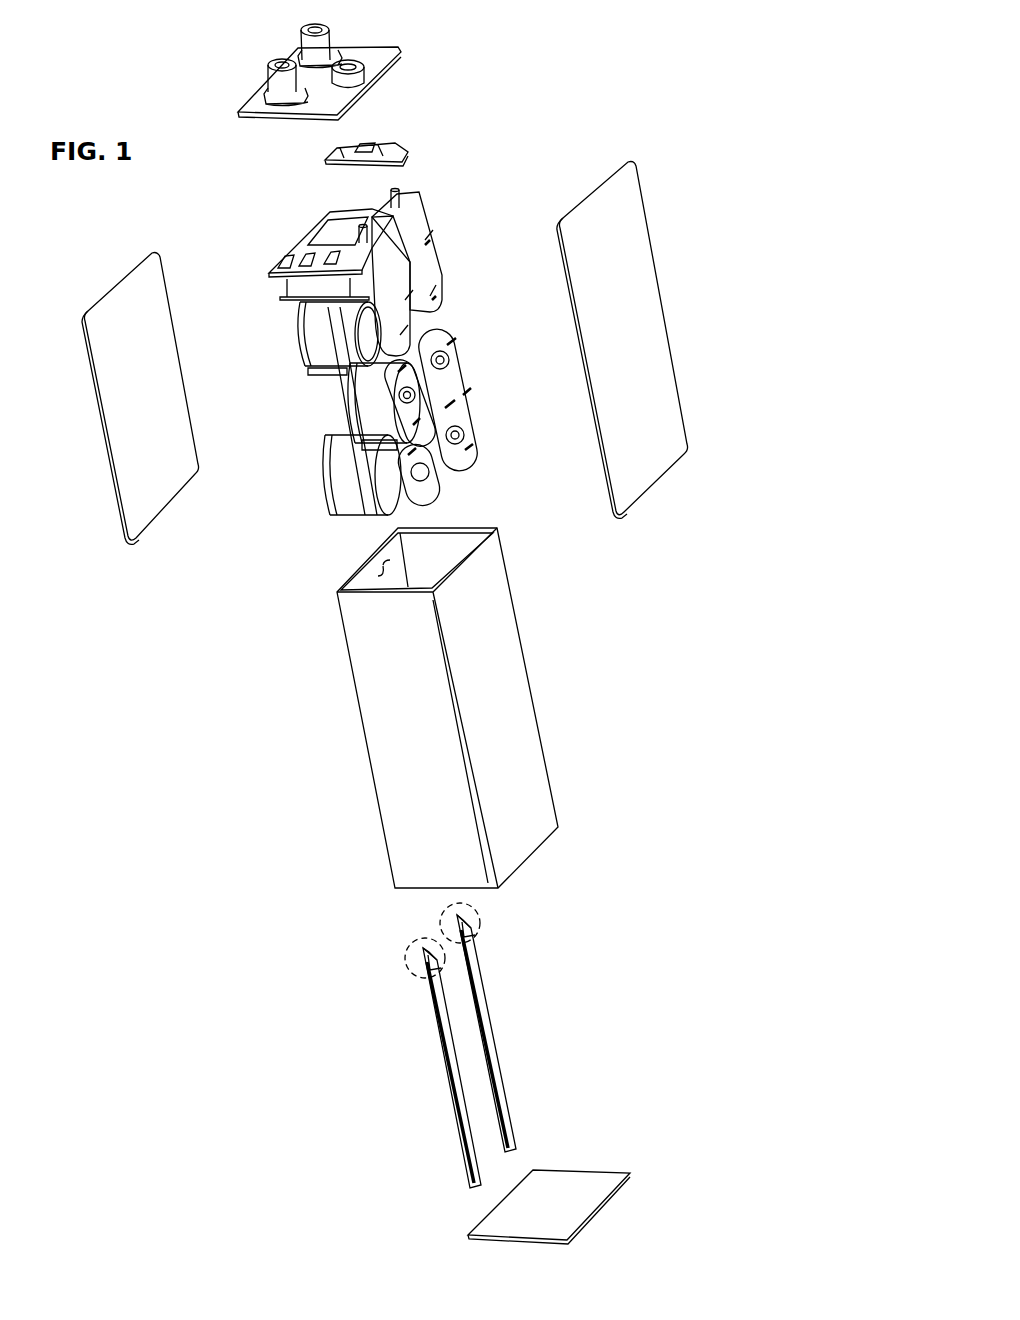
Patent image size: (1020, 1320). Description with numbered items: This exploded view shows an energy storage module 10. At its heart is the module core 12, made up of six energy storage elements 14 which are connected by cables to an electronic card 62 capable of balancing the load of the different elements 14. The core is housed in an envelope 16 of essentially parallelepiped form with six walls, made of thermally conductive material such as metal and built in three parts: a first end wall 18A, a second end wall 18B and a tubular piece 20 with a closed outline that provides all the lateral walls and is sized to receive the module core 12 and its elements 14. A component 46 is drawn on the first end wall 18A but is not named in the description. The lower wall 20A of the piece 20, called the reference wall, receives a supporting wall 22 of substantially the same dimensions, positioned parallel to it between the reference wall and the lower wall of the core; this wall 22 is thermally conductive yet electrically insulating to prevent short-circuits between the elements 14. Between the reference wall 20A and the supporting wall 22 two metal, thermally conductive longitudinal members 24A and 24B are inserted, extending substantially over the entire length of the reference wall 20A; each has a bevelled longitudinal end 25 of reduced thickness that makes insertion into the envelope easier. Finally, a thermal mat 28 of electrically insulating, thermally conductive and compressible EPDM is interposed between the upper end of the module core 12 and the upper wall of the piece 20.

The module 10 is at (744, 852).
The module core 12 is at (377, 352).
The energy storage elements 14 is at (337, 455).
The envelope 16 is at (602, 680).
The first end wall 18A is at (373, 58).
The second end wall 18B is at (562, 1185).
The piece comprising all the lateral walls 20 is at (442, 708).
The lower wall (reference wall) 20A is at (383, 565).
The supporting wall 22 is at (148, 354).
The longitudinal member 24A is at (496, 1028).
The longitudinal member 24B is at (432, 1040).
The bevelled longitudinal end 25 is at (442, 922).
The thermal mat 28 is at (638, 343).
The terminal posts 46 is at (277, 77).
The electronic card 62 is at (290, 260).